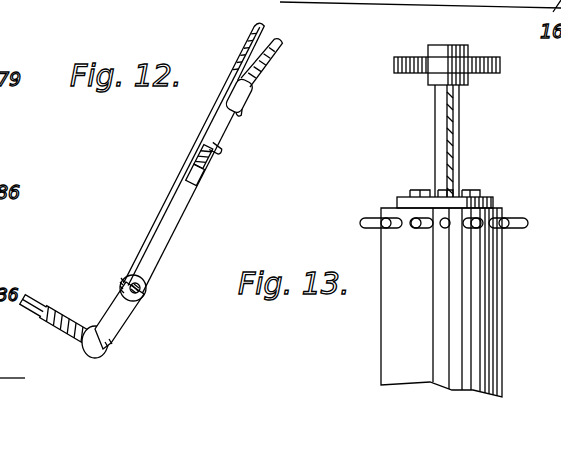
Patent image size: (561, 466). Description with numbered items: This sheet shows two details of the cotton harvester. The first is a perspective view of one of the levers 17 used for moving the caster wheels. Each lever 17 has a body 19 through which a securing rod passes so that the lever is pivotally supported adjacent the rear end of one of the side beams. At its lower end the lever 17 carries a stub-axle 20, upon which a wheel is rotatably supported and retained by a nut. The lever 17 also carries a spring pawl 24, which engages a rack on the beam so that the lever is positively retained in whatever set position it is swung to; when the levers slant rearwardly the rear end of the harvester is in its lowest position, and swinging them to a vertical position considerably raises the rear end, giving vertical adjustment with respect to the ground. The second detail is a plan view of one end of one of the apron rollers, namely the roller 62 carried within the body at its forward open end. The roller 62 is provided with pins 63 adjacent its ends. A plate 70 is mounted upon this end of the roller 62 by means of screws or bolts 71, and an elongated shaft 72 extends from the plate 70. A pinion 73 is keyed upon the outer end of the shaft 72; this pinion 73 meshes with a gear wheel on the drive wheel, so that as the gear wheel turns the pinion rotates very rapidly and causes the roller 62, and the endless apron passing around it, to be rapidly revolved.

In FIG. 12, the lever 17 is at (163, 203).
In FIG. 12, the body 19 is at (140, 293).
In FIG. 12, the stub-axle 20 is at (58, 314).
In FIG. 12, the spring pawl 24 is at (204, 169).
In FIG. 13, the roller 62 is at (397, 330).
In FIG. 13, the pins 63 is at (525, 226).
In FIG. 13, the plate 70 is at (398, 200).
In FIG. 13, the screws or bolts 71 is at (445, 190).
In FIG. 13, the elongated shaft 72 is at (440, 111).
In FIG. 13, the pinion 73 is at (480, 58).